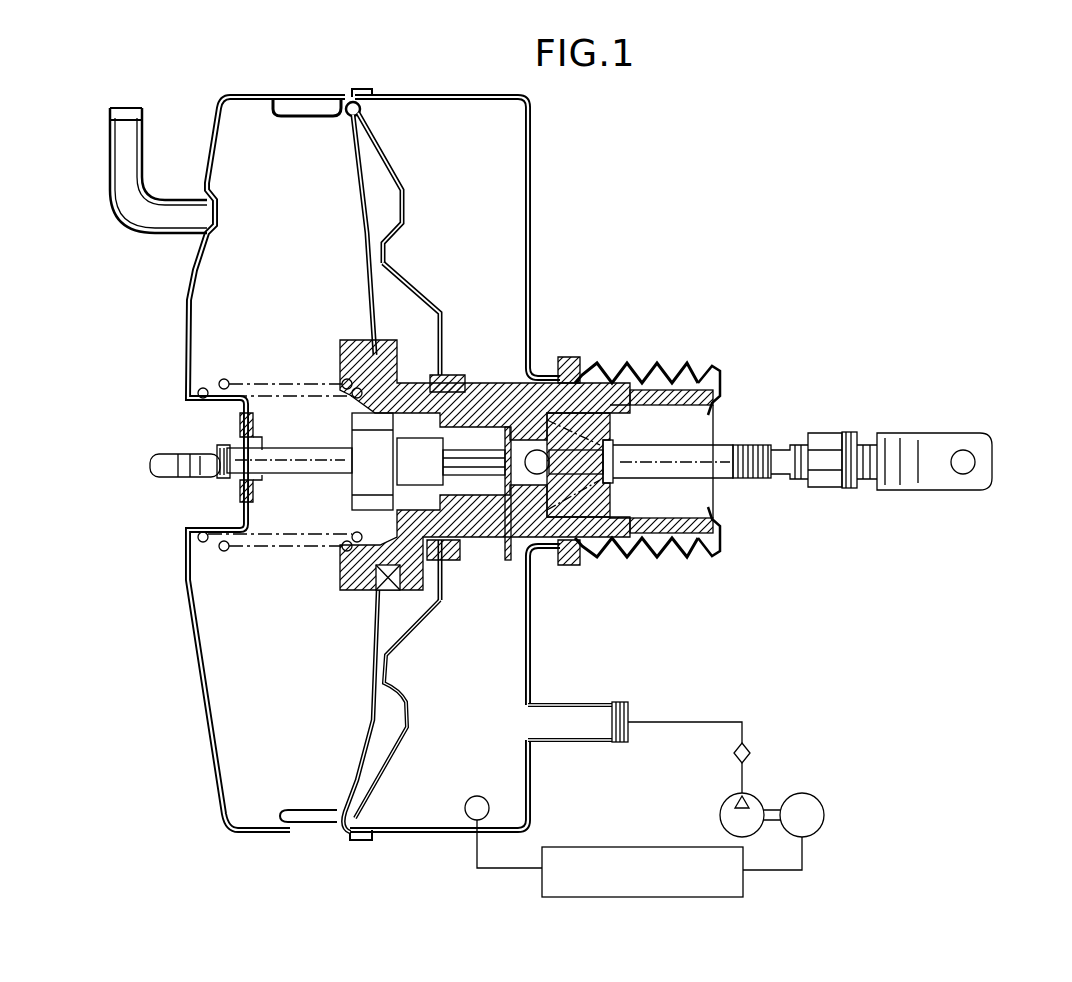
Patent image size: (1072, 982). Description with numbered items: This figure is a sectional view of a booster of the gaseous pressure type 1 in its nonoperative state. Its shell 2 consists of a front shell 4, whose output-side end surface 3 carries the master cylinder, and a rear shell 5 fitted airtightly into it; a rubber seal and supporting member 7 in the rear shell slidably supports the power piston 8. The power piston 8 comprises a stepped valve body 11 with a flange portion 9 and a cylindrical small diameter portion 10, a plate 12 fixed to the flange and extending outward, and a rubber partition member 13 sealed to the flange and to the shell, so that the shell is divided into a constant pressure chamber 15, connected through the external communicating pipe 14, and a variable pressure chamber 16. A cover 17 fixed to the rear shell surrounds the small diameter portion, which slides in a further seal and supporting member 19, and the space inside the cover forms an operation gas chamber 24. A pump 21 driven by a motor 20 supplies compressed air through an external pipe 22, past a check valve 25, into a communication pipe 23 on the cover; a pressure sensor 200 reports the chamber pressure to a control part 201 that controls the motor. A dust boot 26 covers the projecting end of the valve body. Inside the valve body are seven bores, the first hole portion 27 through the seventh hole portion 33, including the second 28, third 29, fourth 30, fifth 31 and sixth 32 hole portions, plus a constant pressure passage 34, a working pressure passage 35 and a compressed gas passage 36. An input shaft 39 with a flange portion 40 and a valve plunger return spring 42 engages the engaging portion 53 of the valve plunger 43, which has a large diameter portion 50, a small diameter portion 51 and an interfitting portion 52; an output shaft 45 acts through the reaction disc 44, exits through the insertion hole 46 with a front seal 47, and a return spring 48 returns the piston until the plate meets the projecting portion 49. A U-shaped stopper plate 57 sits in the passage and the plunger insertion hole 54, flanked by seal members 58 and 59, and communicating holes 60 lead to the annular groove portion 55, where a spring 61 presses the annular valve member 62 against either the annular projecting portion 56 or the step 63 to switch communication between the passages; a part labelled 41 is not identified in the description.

The booster of the gaseous pressure type 1 is at (845, 222).
The shell 2 is at (208, 130).
The end surface 3 is at (187, 368).
The front shell 4 is at (190, 278).
The rear shell 5 is at (412, 282).
The seal and supporting member 7 is at (445, 325).
The power piston 8 is at (352, 258).
The flange portion 9 is at (346, 340).
The cylindrical small diameter portion 10 is at (650, 388).
The valve body 11 is at (449, 436).
The plate 12 is at (370, 188).
The partition member 13 is at (385, 178).
The external communicating pipe 14 is at (110, 172).
The constant pressure chamber 15 is at (212, 612).
The variable pressure chamber 16 is at (405, 630).
The cover 17 is at (535, 666).
The seal and supporting member 19 is at (593, 556).
The motor 20 is at (822, 800).
The pump 21 is at (750, 796).
The external pipe 22 is at (692, 720).
The communication pipe 23 is at (600, 742).
The operation gas chamber 24 is at (528, 795).
The check valve 25 is at (747, 748).
The dust boot 26 is at (706, 377).
The first hole portion 27 is at (690, 380).
The second hole portion 28 is at (612, 380).
The third hole portion 29 is at (540, 545).
The fourth hole portion 30 is at (470, 520).
The fifth hole portion 31 is at (420, 560).
The sixth hole portion 32 is at (352, 488).
The seventh hole portion 33 is at (352, 506).
The constant pressure passage 34 is at (352, 398).
The working pressure passage 35 is at (441, 600).
The compressed gas passage 36 is at (506, 562).
The input shaft 39 is at (838, 432).
The flange portion 40 is at (640, 446).
The passage 41 is at (562, 548).
The valve plunger return spring 42 is at (598, 372).
The valve plunger 43 is at (575, 370).
The reaction disc 44 is at (362, 455).
The output shaft 45 is at (283, 447).
The insertion hole 46 is at (266, 478).
The front seal 47 is at (232, 488).
The return spring 48 is at (282, 552).
The projecting portion 49 is at (376, 666).
The large diameter portion 50 is at (545, 395).
The small diameter portion 51 is at (495, 405).
The interfitting portion 52 is at (391, 342).
The engaging portion 53 is at (600, 480).
The insertion hole 54 is at (533, 378).
The annular groove portion 55 is at (462, 385).
The annular projecting portion 56 is at (422, 380).
The stopper plate 57 is at (532, 565).
The seal member 58 is at (522, 545).
The seal member 59 is at (476, 540).
The communicating holes 60 is at (512, 400).
The spring 61 is at (420, 461).
The annular valve member 62 is at (477, 412).
The step 63 is at (442, 545).
The pressure sensor 200 is at (477, 796).
The control part 201 is at (650, 845).